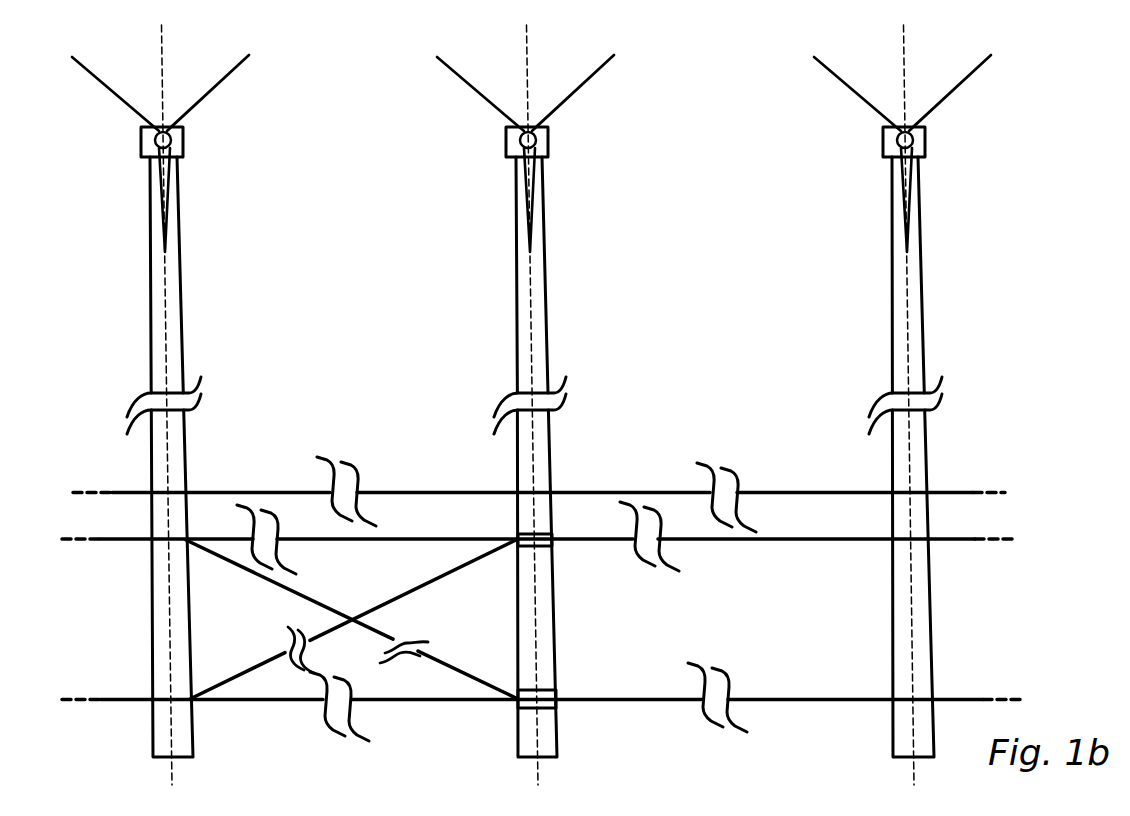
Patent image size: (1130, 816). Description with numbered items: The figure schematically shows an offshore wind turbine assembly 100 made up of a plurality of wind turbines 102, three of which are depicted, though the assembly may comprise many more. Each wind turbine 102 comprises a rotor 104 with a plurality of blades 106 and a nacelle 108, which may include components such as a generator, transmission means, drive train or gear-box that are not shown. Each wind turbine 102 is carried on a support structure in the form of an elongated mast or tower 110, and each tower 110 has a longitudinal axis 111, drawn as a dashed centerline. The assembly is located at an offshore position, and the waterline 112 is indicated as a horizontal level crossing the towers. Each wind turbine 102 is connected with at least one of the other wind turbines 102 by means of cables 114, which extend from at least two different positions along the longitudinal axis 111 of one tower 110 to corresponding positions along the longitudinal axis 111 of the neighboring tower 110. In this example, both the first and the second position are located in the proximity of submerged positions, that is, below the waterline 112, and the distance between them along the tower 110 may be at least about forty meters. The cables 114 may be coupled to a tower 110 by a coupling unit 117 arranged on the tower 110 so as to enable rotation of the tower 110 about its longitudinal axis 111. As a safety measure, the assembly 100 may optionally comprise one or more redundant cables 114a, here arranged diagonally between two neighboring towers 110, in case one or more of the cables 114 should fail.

The offshore wind turbine assembly 100 is at (1003, 93).
The wind turbine 102 is at (102, 187).
The rotor 104 is at (519, 117).
The blade 106 is at (612, 56).
The nacelle 108 is at (549, 143).
The tower 110 is at (178, 247).
The longitudinal axis 111 is at (180, 660).
The waterline 112 is at (122, 492).
The cable 114 is at (433, 540).
The redundant cable 114a is at (225, 562).
The coupling unit 117 is at (520, 548).